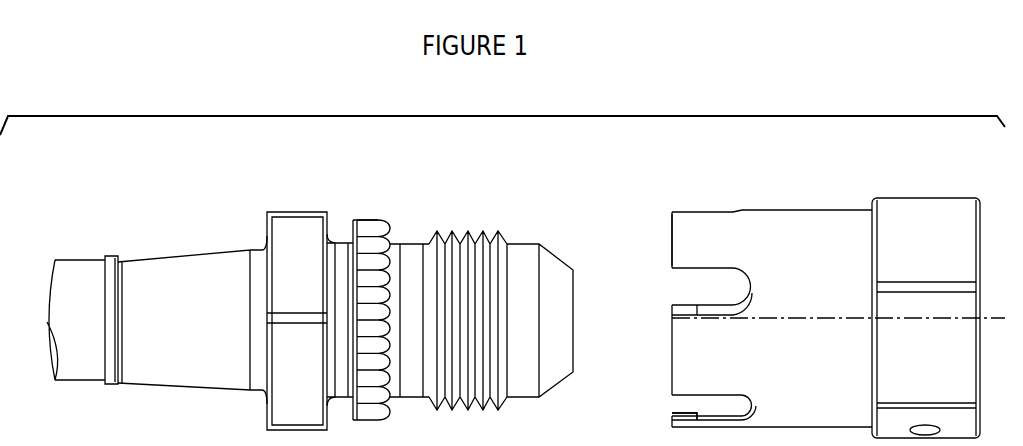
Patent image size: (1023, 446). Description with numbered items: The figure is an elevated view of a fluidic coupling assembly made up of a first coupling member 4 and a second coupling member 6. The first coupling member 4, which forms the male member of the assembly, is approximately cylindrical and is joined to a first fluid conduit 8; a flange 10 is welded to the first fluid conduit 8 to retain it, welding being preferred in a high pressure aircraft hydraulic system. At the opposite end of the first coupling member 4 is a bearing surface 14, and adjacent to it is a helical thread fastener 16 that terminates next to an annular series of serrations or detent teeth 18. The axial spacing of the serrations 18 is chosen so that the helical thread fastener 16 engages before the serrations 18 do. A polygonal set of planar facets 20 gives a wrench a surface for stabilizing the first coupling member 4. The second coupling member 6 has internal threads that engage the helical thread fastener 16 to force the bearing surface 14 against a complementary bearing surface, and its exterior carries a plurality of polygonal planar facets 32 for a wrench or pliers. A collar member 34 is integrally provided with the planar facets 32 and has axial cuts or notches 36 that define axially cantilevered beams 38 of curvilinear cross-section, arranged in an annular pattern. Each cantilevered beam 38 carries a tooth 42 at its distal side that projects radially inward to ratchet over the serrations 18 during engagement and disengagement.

The first coupling member 4 is at (168, 252).
The second coupling member 6 is at (806, 290).
The first fluid conduit 8 is at (77, 276).
The flange 10 is at (110, 255).
The bearing surface 14 is at (552, 250).
The helical thread fastener 16 is at (453, 233).
The serrations 18 is at (367, 219).
The polygonal set of planar facets 20 is at (300, 245).
The planar facets 32 is at (940, 220).
The collar member 34 is at (768, 223).
The axial cuts or notches 36 is at (707, 422).
The cantilevered beams 38 is at (685, 240).
The tooth 42 is at (680, 413).